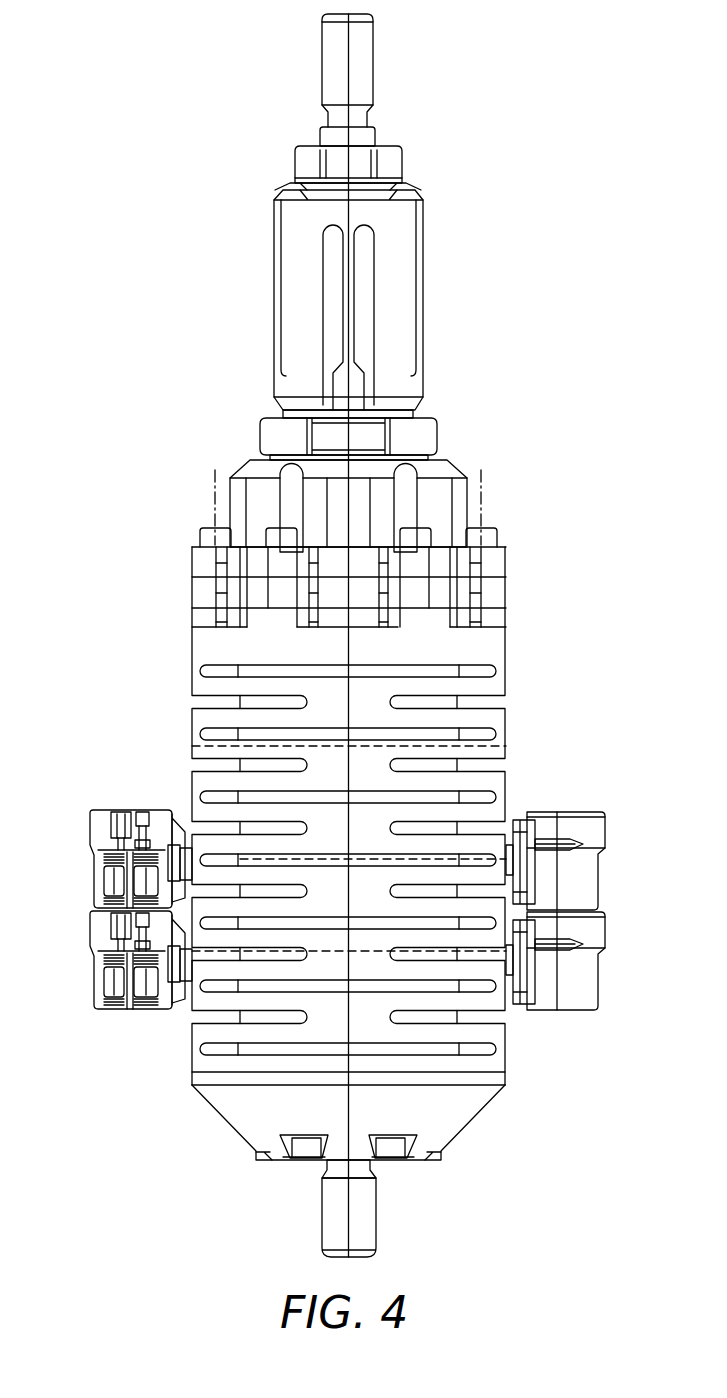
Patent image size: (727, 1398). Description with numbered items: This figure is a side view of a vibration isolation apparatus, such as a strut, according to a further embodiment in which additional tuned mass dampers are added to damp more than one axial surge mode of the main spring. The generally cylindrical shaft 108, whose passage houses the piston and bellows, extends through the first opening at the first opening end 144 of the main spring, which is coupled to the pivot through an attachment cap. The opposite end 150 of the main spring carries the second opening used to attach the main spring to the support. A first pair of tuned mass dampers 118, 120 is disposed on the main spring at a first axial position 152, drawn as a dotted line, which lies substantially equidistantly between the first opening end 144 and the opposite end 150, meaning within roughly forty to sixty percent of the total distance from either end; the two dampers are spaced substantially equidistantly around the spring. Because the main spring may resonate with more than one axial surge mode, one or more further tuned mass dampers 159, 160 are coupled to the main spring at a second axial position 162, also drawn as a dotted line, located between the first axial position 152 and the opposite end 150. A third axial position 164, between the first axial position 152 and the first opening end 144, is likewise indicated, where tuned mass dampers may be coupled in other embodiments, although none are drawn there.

The shaft 108 is at (196, 712).
The first opening end 144 is at (255, 605).
The third axial position 164 is at (197, 745).
The first axial position 152 is at (240, 855).
The second axial position 162 is at (238, 952).
The opposite end 150 is at (499, 1078).
The tuned mass damper 118 is at (90, 885).
The tuned mass damper 159 is at (90, 978).
The tuned mass damper 120 is at (603, 880).
The tuned mass damper 160 is at (603, 978).